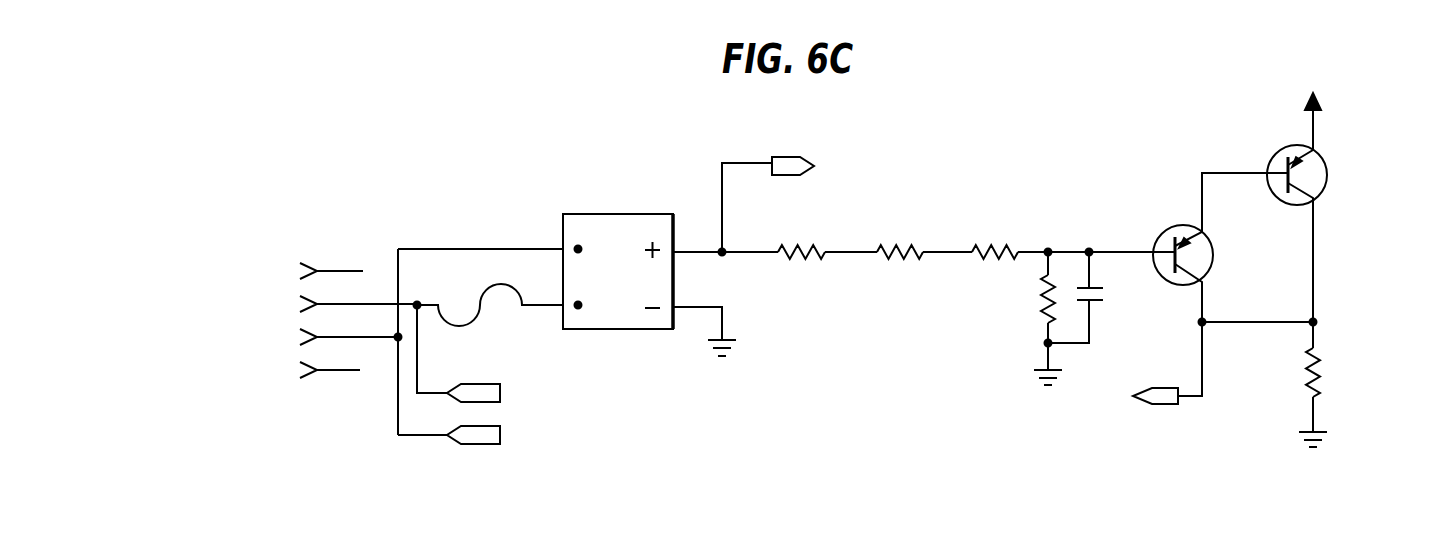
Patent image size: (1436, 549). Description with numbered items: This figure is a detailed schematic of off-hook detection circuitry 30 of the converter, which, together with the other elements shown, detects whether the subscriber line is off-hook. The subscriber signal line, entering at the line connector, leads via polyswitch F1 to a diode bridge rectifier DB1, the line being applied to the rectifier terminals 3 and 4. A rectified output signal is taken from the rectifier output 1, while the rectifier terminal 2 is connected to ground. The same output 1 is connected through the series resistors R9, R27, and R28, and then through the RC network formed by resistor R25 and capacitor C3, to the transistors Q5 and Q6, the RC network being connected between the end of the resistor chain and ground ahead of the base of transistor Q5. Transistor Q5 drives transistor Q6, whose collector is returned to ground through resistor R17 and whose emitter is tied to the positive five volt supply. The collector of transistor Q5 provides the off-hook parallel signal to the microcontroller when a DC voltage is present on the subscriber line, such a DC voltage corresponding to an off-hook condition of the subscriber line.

The telephone line interface circuit 30 is at (1030, 102).
The DB1 pin 1 (rectified output) 1 is at (794, 203).
The DB1 pin 2 (ground) 2 is at (704, 316).
The DB1 pin 3 (AC input) 3 is at (480, 233).
The DB1 pin 4 (AC input via fuse) 4 is at (542, 289).
The polyswitch F1 is at (490, 294).
The diode bridge rectifier DB1 is at (618, 275).
The series resistor R9 is at (801, 235).
The series resistor R27 is at (899, 235).
The series resistor R28 is at (995, 236).
The RC network resistor R25 is at (1025, 311).
The RC network capacitor C3 is at (1089, 297).
The transistor Q5 is at (1211, 284).
The transistor Q6 is at (1305, 205).
The resistor R17 is at (1338, 390).